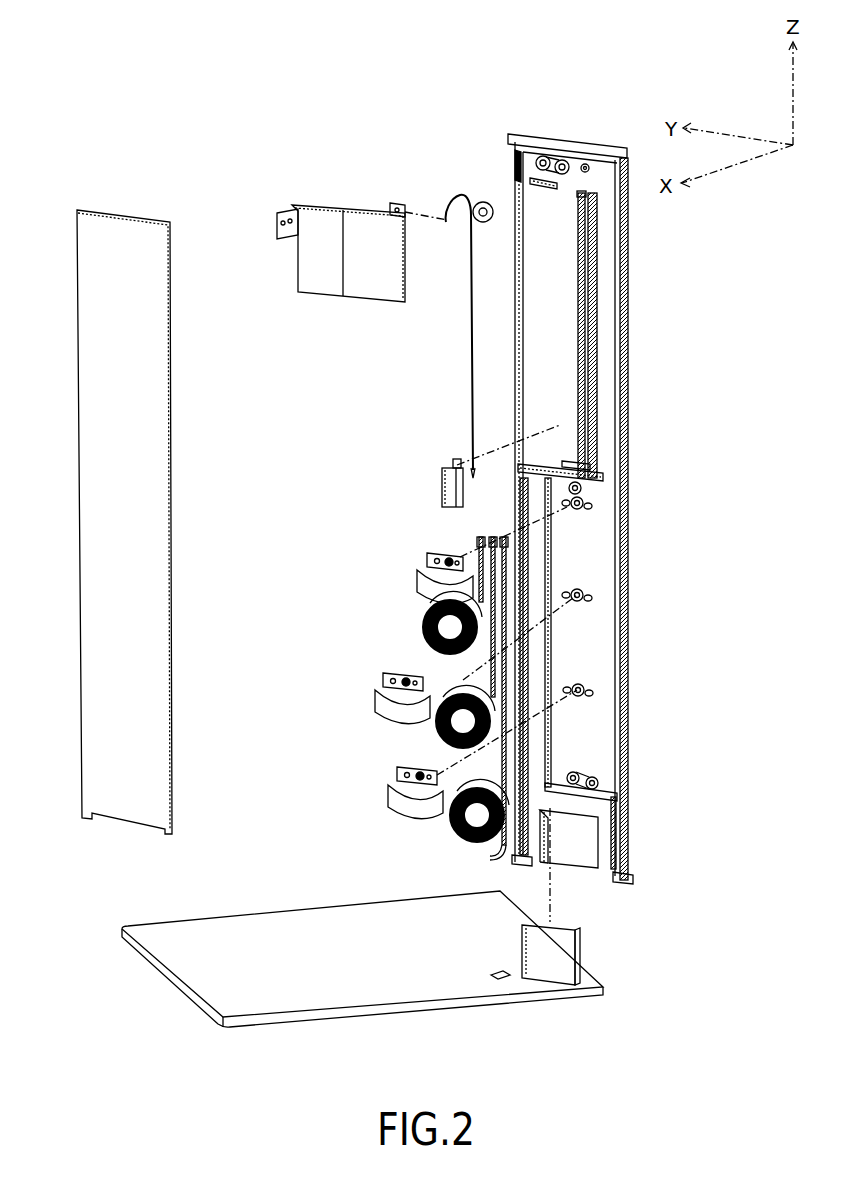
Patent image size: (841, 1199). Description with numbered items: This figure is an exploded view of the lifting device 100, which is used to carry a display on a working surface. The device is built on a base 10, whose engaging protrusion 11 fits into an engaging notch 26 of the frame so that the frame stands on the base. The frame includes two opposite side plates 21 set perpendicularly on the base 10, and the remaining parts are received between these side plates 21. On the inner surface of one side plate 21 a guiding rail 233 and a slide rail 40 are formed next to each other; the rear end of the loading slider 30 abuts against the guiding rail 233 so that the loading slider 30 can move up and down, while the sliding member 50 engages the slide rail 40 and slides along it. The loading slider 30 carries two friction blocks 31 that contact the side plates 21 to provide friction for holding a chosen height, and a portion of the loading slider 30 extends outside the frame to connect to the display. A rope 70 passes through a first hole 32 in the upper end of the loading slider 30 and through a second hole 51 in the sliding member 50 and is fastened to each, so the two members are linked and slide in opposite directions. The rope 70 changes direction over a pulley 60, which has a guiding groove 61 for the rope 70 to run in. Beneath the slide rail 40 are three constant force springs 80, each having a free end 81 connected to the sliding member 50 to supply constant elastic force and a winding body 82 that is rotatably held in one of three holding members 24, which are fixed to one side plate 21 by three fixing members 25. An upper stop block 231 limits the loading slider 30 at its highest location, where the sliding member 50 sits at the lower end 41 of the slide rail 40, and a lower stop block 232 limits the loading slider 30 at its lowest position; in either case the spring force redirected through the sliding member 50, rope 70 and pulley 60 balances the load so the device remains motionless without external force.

The lifting device 100 is at (614, 60).
The base 10 is at (445, 995).
The engaging protrusion 11 is at (566, 947).
The side plate 21 is at (93, 248).
The upper stop block 231 is at (535, 178).
The lower stop block 232 is at (573, 467).
The guiding rail 233 is at (577, 207).
The holding member 24 is at (427, 560).
The fixing member 25 is at (586, 505).
The engaging notch 26 is at (578, 858).
The loading slider 30 is at (330, 275).
The friction block 31 is at (362, 222).
The first hole 32 is at (398, 203).
The slide rail 40 is at (597, 238).
The lower end 41 is at (604, 476).
The sliding member 50 is at (441, 490).
The second hole 51 is at (456, 459).
The pulley 60 is at (483, 201).
The guiding groove 61 is at (487, 207).
The rope 70 is at (472, 305).
The constant force spring 80 is at (422, 635).
The free end 81 is at (503, 537).
The winding body 82 is at (432, 612).